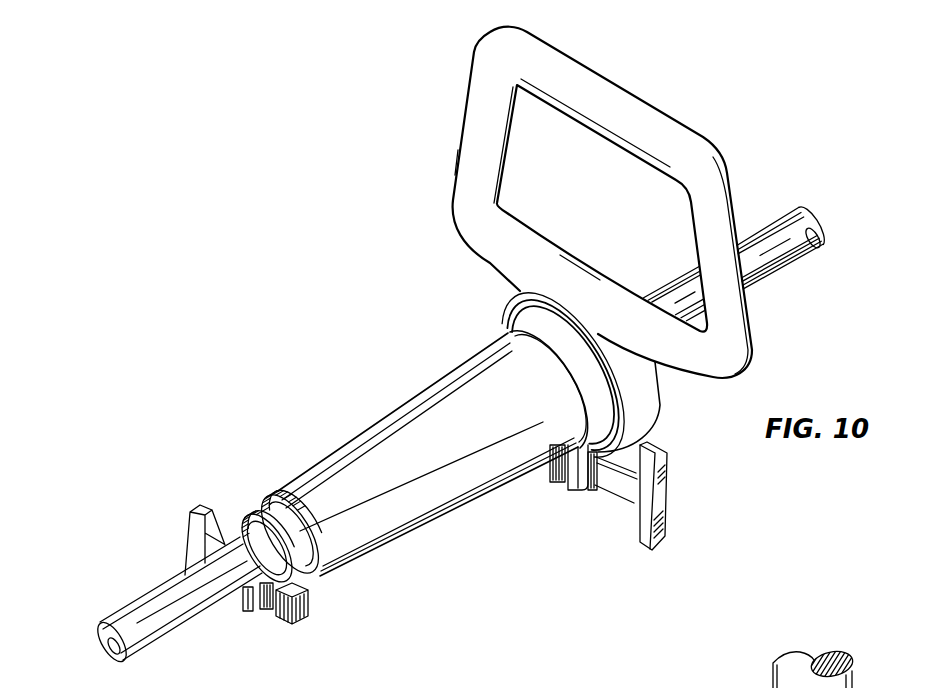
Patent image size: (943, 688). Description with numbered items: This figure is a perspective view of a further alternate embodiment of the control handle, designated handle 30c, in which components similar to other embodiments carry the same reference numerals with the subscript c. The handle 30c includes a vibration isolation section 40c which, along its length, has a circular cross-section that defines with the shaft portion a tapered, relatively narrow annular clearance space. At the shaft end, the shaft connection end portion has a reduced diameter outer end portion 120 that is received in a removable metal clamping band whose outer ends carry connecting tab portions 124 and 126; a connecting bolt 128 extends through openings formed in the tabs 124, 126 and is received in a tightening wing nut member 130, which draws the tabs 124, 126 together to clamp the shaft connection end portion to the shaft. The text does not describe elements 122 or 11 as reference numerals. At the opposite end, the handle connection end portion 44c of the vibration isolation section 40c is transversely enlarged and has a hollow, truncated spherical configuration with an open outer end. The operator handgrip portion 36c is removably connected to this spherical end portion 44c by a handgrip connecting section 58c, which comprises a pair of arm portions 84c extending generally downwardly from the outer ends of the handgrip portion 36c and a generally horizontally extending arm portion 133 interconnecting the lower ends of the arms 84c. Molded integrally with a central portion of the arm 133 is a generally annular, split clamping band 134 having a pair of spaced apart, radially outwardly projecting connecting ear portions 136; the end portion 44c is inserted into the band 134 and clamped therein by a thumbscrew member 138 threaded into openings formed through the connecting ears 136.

The operator handgrip portion 36c is at (631, 85).
The arm portions 84c is at (459, 152).
The horizontally extending arm portion 133 is at (584, 268).
The handgrip connecting section 58c is at (766, 336).
The section line 11- 11 is at (802, 182).
The handle 30c is at (331, 330).
The handle connection end portion 44c is at (516, 330).
The vibration isolation section 40c is at (378, 414).
The split clamping band 134 is at (656, 404).
The connecting ear portions 136 is at (547, 478).
The thumbscrew member 138 is at (666, 496).
The tightening wing nut member 130 is at (189, 518).
The reduced diameter outer end portion 120 is at (237, 530).
The ring 122 is at (263, 503).
The connecting tab portion 124 is at (247, 610).
The connecting tab portion 126 is at (280, 624).
The connecting bolt 128 is at (307, 600).